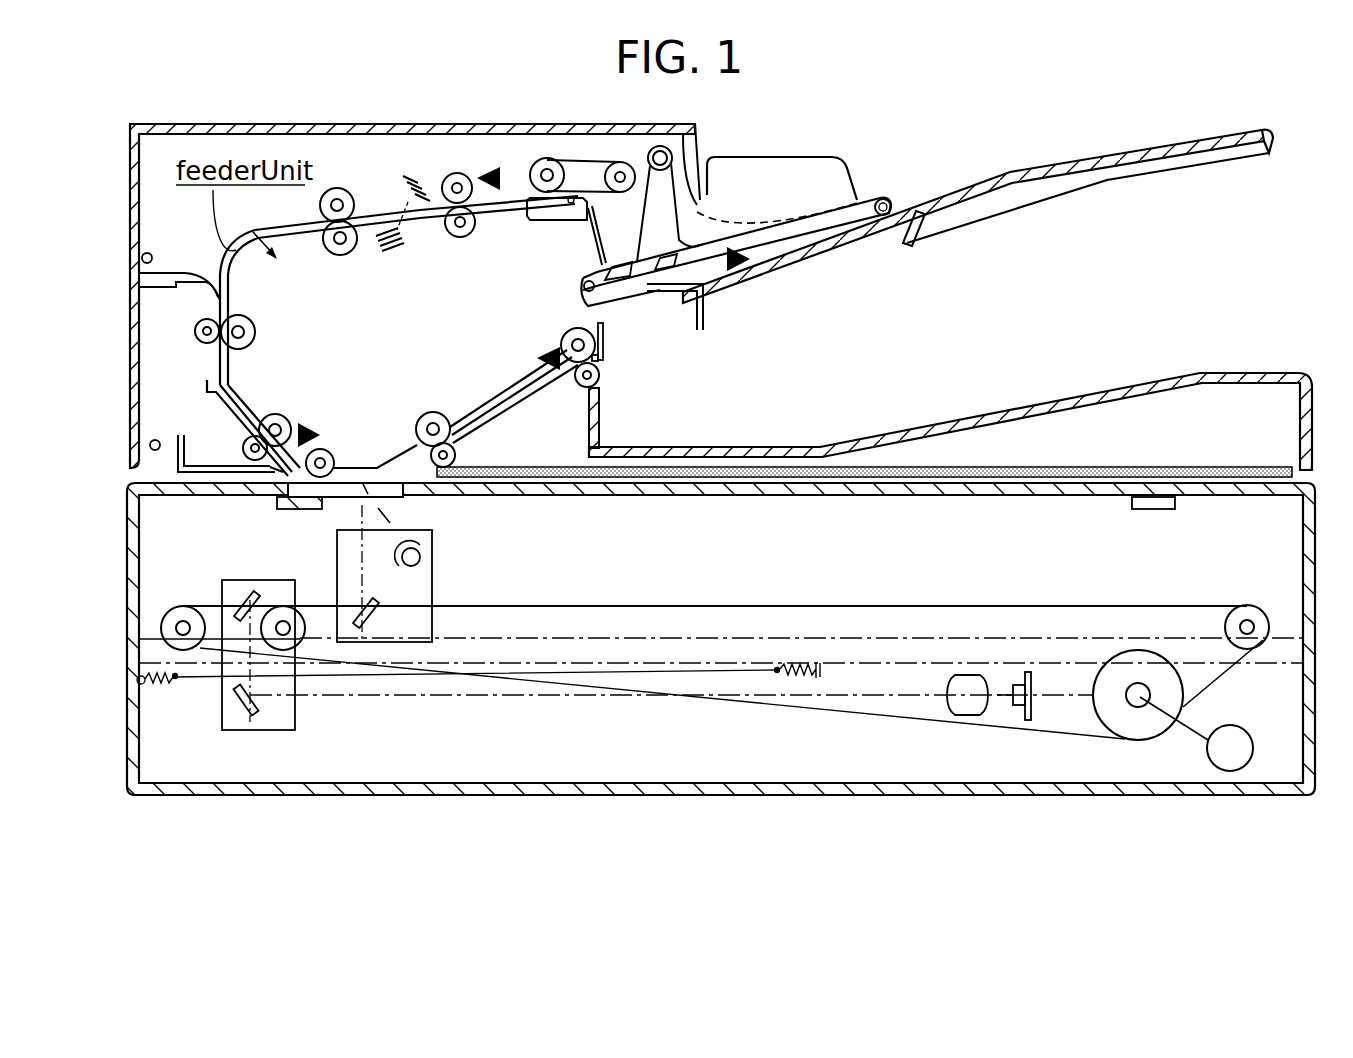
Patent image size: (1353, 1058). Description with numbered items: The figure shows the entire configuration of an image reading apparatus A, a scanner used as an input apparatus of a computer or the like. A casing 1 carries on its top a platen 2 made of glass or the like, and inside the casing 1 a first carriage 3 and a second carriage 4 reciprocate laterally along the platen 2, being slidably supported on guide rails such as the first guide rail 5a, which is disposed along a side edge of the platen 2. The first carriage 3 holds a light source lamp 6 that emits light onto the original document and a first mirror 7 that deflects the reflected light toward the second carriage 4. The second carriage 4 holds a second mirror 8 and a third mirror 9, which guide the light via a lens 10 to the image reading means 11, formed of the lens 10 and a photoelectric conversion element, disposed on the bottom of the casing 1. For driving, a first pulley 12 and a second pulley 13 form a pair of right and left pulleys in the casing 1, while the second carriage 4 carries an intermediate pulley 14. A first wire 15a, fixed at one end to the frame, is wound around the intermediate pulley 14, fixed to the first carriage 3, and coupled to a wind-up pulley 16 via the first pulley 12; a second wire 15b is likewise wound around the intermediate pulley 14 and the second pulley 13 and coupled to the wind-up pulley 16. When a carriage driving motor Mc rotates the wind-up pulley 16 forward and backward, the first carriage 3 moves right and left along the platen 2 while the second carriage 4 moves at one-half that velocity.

The image reading apparatus A is at (115, 516).
The casing 1 is at (140, 678).
The platen 2 is at (602, 500).
The first carriage 3 is at (433, 580).
The second carriage 4 is at (287, 731).
The first guide rail 5a is at (748, 638).
The light source lamp 6 is at (420, 555).
The first mirror 7 is at (360, 608).
The second mirror 8 is at (248, 597).
The third mirror 9 is at (244, 714).
The lens 10 is at (967, 716).
The image reading means 11 is at (1030, 721).
The first pulley 12 is at (1246, 608).
The second pulley 13 is at (162, 622).
The intermediate pulley 14 is at (290, 642).
The first wire 15a is at (1005, 605).
The second wire 15b is at (812, 706).
The wind-up pulley 16 is at (1138, 740).
The carriage driving motor Mc is at (1196, 734).